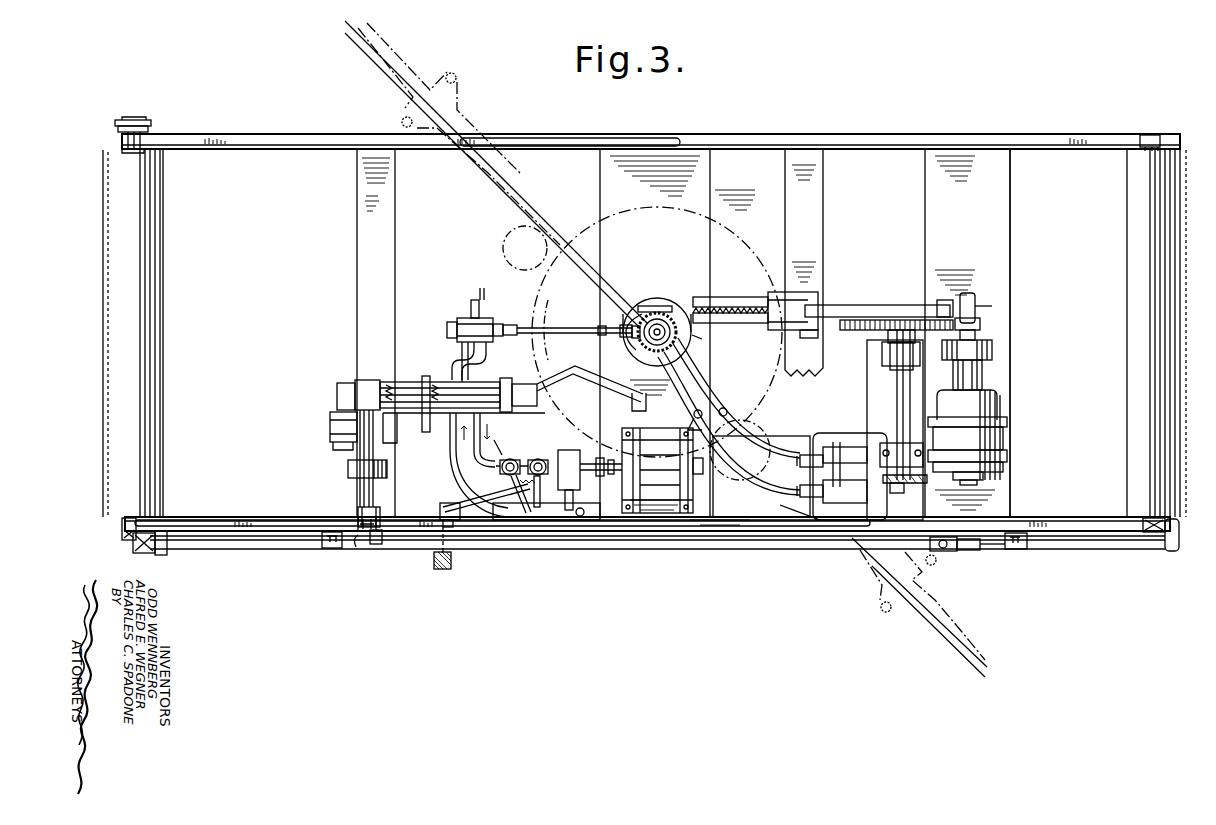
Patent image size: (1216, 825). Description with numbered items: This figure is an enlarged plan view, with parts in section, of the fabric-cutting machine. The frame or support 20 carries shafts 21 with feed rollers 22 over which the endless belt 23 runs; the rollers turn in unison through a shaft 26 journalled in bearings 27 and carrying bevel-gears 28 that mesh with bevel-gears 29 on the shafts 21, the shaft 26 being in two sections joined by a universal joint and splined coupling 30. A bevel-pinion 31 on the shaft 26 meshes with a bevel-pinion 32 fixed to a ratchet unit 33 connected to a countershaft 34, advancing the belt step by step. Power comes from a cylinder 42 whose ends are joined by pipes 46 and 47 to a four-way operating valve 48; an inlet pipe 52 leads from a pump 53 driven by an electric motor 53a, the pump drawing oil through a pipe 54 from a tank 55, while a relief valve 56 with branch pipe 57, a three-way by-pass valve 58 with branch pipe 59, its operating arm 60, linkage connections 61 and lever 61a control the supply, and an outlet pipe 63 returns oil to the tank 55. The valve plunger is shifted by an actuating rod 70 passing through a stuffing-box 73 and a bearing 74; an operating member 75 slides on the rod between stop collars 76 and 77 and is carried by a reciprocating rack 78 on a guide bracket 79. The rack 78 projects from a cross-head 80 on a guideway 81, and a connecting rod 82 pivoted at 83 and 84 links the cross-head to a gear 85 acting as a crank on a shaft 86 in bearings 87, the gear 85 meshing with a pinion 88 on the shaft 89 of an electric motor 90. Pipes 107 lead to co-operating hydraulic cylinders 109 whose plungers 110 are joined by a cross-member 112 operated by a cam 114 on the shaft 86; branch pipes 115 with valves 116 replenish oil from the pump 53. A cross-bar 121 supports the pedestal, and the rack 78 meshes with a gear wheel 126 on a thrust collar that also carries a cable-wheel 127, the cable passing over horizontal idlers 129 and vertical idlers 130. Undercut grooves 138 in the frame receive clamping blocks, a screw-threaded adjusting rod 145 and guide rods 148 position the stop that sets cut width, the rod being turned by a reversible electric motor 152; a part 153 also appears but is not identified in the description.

The frame or support 20 is at (880, 134).
The shafts 21 is at (152, 130).
The feed rollers 22 is at (163, 268).
The endless belt 23 is at (103, 283).
The shaft 26 is at (215, 549).
The bearings 27 is at (328, 549).
The bevel-gears 28 is at (140, 553).
The bevel-gears 29 is at (125, 534).
The universal joint and splined coupling 30 is at (945, 552).
The bevel-pinion 31 is at (378, 546).
The bevel-pinion 32 is at (364, 533).
The ratchet unit 33 is at (348, 469).
The countershaft 34 is at (360, 444).
The cylinder 42 is at (580, 396).
The pipe 46 is at (600, 368).
The pipe 47 is at (548, 380).
The four-way operating valve 48 is at (468, 313).
The inlet pipe 52 is at (495, 359).
The pump 53 is at (570, 450).
The electric motor 53a is at (660, 513).
The pipe 54 is at (574, 495).
The tank 55 is at (552, 520).
The relief valve 56 is at (540, 454).
The branch pipe 57 is at (541, 489).
The three-way by-pass valve 58 is at (518, 458).
The branch pipe 59 is at (522, 472).
The operating arm 60 is at (502, 474).
The linkage connections 61 is at (505, 520).
The lever 61a is at (444, 569).
The outlet pipe 63 is at (450, 457).
The actuating rod 70 is at (575, 328).
The stuffing-box 73 is at (512, 325).
The bearing 74 is at (640, 356).
The operating member 75 is at (632, 336).
The stop collar 76 is at (548, 305).
The stop collar 77 is at (632, 316).
The reciprocating rack 78 is at (740, 297).
The guide bracket 79 is at (656, 306).
The cross-head 80 is at (810, 295).
The guideway 81 is at (760, 313).
The connecting rod 82 is at (880, 305).
The pivot connection 83 is at (812, 338).
The pivot connection 84 is at (942, 300).
The gear 85 is at (895, 320).
The shaft 86 is at (897, 404).
The bearings 87 is at (895, 355).
The pinion 88 is at (980, 324).
The shaft 89 is at (992, 306).
The electric motor 90 is at (1007, 433).
The pipes 107 is at (755, 440).
The co-operating hydraulic cylinders 109 is at (800, 491).
The plungers 110 is at (868, 438).
The cross-member 112 is at (832, 522).
The cam 114 is at (912, 500).
The branch pipes 115 is at (636, 504).
The valves 116 is at (722, 400).
The cross-bar 121 is at (708, 198).
The gear wheel 126 is at (700, 336).
The cable-wheel 127 is at (657, 332).
The horizontal idlers 129 is at (505, 243).
The vertical idlers 130 is at (364, 37).
The undercut grooves 138 is at (640, 140).
The screw-threaded adjusting rod 145 is at (460, 350).
The stationary guide rods 148 is at (455, 369).
The reversible electric motor 152 is at (330, 419).
The bracket 153 is at (426, 420).